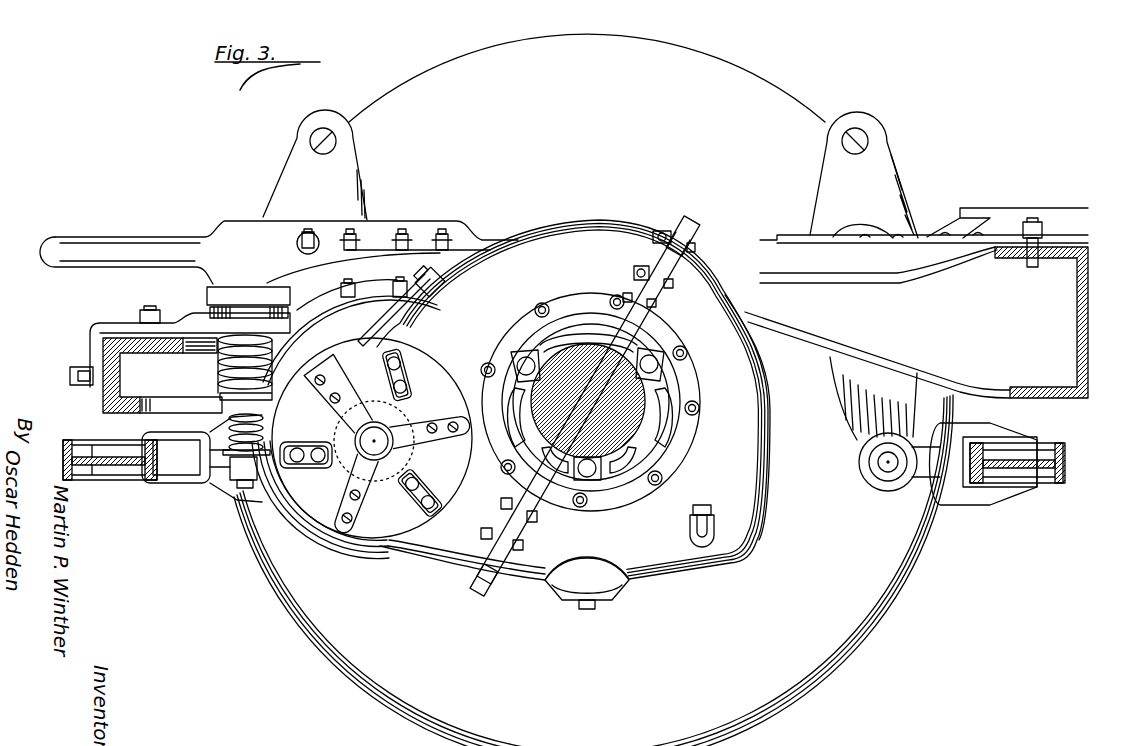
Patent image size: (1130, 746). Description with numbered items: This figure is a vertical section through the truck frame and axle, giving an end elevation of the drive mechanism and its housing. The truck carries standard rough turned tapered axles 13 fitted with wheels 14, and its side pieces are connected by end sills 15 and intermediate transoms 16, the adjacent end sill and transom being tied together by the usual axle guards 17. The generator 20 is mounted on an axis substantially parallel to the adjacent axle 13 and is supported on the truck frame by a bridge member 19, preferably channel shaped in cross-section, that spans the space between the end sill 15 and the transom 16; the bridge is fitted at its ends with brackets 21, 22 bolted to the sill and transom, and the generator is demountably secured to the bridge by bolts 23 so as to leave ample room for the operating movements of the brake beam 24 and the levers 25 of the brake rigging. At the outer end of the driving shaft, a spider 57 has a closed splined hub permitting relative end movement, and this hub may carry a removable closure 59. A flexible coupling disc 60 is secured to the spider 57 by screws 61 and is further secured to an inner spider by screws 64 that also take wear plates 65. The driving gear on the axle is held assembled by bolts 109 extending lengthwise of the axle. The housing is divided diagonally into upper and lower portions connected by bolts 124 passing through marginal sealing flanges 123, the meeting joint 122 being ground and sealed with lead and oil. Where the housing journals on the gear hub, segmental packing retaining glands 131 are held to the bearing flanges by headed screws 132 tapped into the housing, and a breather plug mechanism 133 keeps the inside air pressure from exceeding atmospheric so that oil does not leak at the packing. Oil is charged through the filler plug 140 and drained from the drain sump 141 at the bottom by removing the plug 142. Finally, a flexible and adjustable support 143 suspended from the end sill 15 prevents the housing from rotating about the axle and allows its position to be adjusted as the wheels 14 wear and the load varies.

The axle 13 is at (765, 448).
The wheels 14 is at (880, 626).
The end sill 15 is at (103, 398).
The transom 16 is at (1055, 246).
The axle guard 17 is at (815, 343).
The bridge member 19 is at (723, 263).
The generator 20 is at (290, 512).
The bracket 21 is at (272, 281).
The bracket 22 is at (917, 238).
The bolts 23 is at (402, 280).
The brake beam 24 is at (70, 445).
The levers 25 is at (292, 160).
The spider 57 is at (348, 437).
The removable closure 59 is at (352, 508).
The flexible coupling disc 60 is at (443, 387).
The screws 61 is at (325, 382).
The screws 64 is at (414, 372).
The wear plates 65 is at (435, 355).
The bolts 109 is at (528, 362).
The joint 122 is at (684, 235).
The sealing flanges 123 is at (636, 272).
The bolts 124 is at (652, 238).
The packing retaining glands 131 is at (686, 447).
The headed screws 132 is at (543, 304).
The breather plug mechanism 133 is at (440, 272).
The filler plug 140 is at (709, 505).
The drain sump 141 is at (615, 590).
The plug 142 is at (590, 610).
The flexible and adjustable support 143 is at (206, 294).